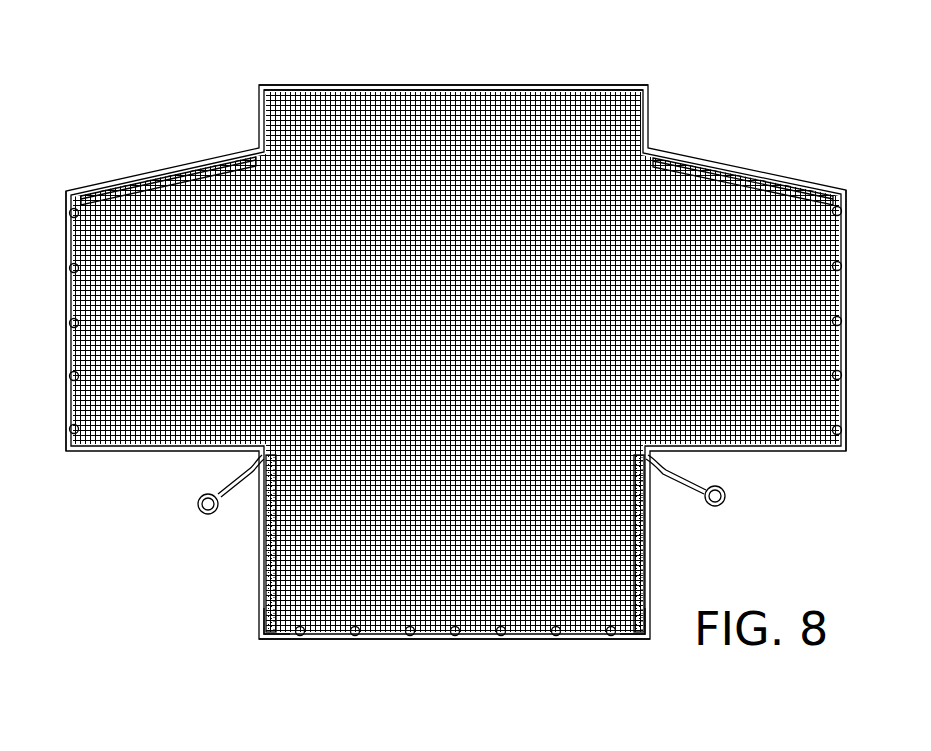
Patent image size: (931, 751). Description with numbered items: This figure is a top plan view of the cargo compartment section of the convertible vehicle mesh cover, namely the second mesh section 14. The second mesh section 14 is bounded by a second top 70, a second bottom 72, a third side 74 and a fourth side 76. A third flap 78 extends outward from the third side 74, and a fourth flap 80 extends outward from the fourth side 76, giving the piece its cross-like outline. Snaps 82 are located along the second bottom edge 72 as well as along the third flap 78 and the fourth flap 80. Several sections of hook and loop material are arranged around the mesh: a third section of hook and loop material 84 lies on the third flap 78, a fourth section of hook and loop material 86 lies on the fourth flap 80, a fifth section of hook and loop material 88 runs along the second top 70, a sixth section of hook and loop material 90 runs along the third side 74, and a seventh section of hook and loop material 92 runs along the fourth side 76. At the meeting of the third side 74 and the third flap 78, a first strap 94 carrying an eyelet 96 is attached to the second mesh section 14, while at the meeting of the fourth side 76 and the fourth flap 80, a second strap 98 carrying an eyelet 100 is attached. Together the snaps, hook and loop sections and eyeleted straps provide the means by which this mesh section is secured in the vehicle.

The second mesh section 14 is at (236, 130).
The second top 70 is at (398, 77).
The second bottom 72 is at (440, 631).
The third side 74 is at (252, 557).
The fourth side 76 is at (642, 538).
The third flap 78 is at (57, 240).
The fourth flap 80 is at (838, 376).
The snaps 82 is at (832, 200).
The third section of hook and loop material 84 is at (150, 162).
The fourth section of hook and loop material 86 is at (712, 157).
The fifth section of hook and loop material 88 is at (561, 87).
The sixth section of hook and loop material 90 is at (260, 605).
The seventh section of hook and loop material 92 is at (636, 624).
The first strap 94 is at (220, 478).
The eyelet 96 is at (195, 503).
The second strap 98 is at (673, 476).
The eyelet 100 is at (702, 498).